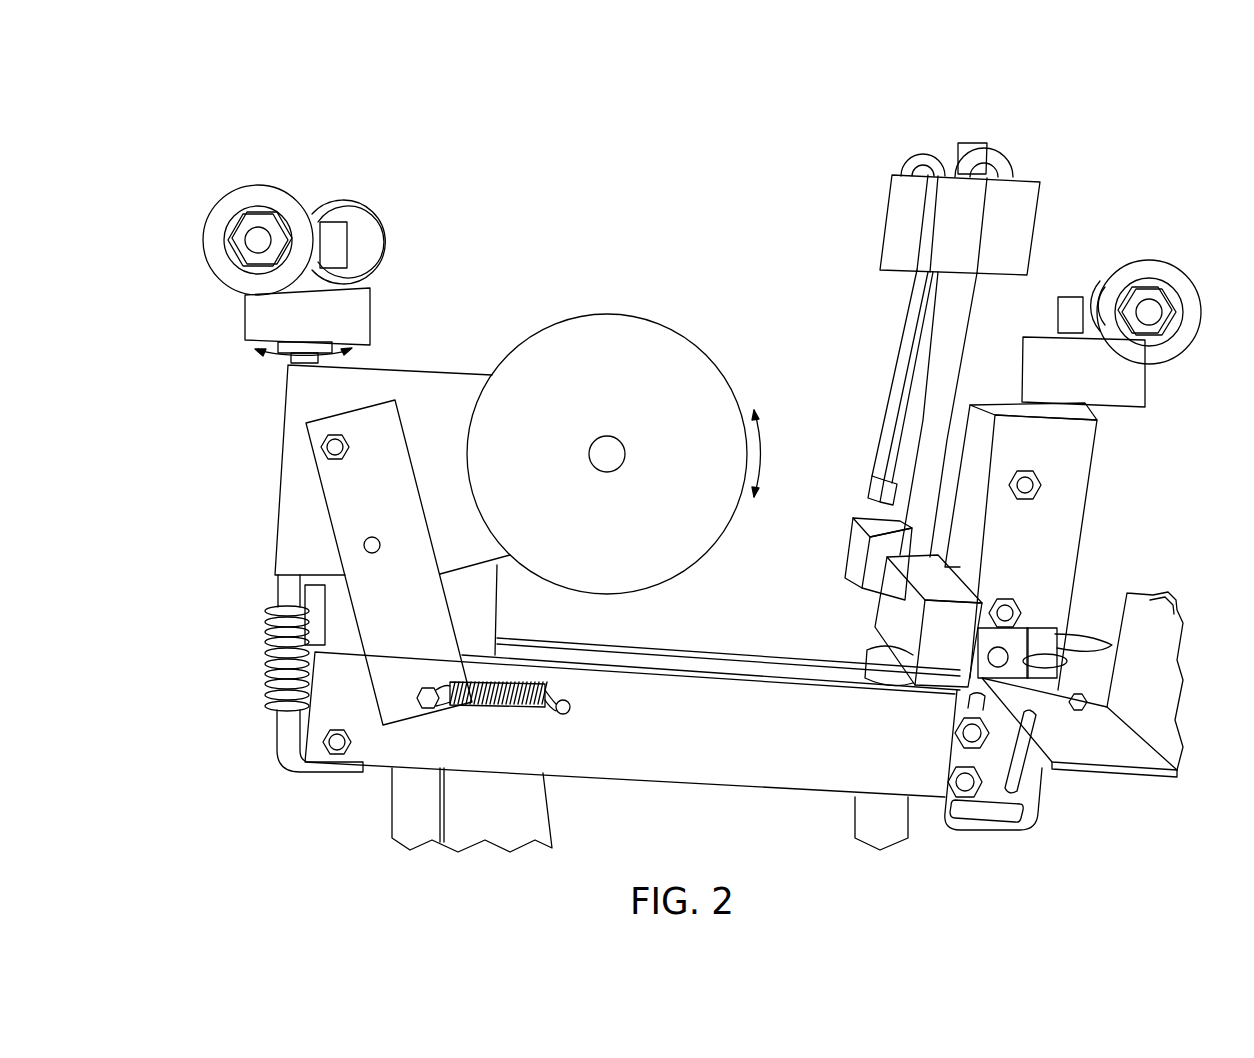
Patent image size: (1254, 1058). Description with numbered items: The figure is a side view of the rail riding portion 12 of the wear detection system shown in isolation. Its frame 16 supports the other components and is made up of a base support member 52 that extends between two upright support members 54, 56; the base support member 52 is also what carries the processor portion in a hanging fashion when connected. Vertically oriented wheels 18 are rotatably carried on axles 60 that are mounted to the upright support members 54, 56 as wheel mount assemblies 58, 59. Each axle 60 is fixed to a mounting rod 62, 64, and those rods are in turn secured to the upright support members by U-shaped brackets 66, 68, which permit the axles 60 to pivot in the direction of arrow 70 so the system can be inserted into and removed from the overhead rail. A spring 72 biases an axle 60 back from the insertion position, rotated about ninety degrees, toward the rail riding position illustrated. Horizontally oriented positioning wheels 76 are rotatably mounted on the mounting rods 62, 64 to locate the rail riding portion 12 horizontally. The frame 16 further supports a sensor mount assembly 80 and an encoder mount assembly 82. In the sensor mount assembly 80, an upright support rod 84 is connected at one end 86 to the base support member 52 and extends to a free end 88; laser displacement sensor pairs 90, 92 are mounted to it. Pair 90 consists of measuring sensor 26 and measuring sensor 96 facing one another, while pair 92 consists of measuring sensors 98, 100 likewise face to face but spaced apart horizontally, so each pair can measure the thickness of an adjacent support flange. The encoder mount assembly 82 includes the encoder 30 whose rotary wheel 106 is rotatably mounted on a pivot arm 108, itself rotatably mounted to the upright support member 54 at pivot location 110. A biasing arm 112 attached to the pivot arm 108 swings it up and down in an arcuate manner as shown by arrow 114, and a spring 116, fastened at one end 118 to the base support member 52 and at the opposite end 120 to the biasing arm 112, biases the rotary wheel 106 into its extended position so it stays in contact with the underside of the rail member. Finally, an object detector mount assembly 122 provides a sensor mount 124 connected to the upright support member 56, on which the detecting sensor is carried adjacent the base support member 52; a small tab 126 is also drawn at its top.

The rail riding portion 12 is at (478, 232).
The frame 16 is at (357, 801).
The wheels 18 is at (252, 195).
The measuring sensor 26 is at (878, 598).
The encoder 30 is at (682, 298).
The base support member 52 is at (738, 690).
The upright support member 54 is at (306, 625).
The upright support member 56 is at (1030, 528).
The wheel mount assembly 58 is at (196, 357).
The wheel mount assembly 59 is at (1146, 208).
The axles 60 is at (340, 230).
The mounting rod 62 is at (268, 740).
The mounting rod 64 is at (1040, 630).
The U-shaped bracket 66 is at (280, 522).
The U-shaped bracket 68 is at (1078, 466).
The arrow 70 is at (262, 360).
The spring 72 is at (260, 668).
The positioning wheels 76 is at (240, 322).
The sensor mount assembly 80 is at (848, 205).
The encoder mount assembly 82 is at (528, 300).
The support rod 84 is at (950, 342).
The end 86 is at (868, 658).
The free end 88 is at (964, 141).
The laser displacement sensor pair 90 is at (1040, 143).
The laser displacement sensor pair 92 is at (868, 154).
The measuring sensor 96 is at (1030, 207).
The measuring sensor 98 is at (845, 538).
The measuring sensor 100 is at (882, 255).
The rotary wheel 106 is at (712, 376).
The pivot arm 108 is at (492, 558).
The pivot location 110 is at (378, 555).
The biasing arm 112 is at (398, 470).
The arrow 114 is at (762, 454).
The spring 116 is at (508, 708).
The end 118 is at (570, 708).
The end 120 is at (420, 690).
The object detector mount assembly 122 is at (1107, 796).
The sensor mount 124 is at (1170, 684).
The tab 126 is at (1162, 592).